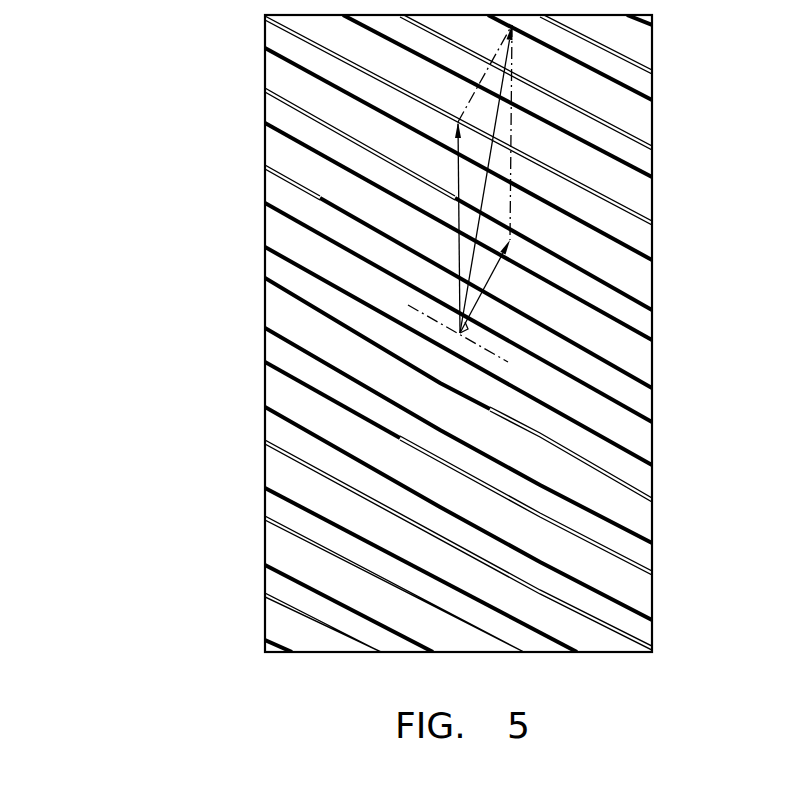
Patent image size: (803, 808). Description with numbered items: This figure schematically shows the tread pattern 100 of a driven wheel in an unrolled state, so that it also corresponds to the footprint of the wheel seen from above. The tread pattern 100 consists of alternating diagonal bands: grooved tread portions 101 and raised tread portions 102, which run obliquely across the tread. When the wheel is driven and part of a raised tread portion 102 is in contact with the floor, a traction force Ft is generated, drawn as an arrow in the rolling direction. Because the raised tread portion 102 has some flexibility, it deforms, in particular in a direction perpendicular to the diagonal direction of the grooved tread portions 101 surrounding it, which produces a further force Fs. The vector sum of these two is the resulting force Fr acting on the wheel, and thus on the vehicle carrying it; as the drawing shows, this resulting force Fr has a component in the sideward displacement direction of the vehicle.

The tread pattern 100 is at (345, 332).
The grooved tread portion 101 is at (281, 353).
The raised tread portion 102 is at (282, 318).
The traction force Ft is at (459, 217).
The resulting force Fr is at (483, 188).
The deformation force Fs is at (487, 281).